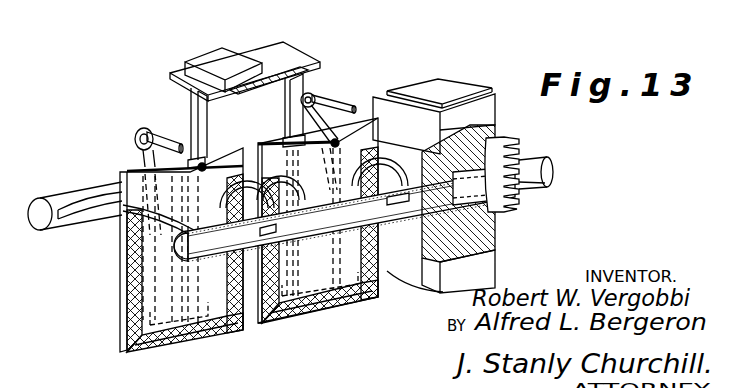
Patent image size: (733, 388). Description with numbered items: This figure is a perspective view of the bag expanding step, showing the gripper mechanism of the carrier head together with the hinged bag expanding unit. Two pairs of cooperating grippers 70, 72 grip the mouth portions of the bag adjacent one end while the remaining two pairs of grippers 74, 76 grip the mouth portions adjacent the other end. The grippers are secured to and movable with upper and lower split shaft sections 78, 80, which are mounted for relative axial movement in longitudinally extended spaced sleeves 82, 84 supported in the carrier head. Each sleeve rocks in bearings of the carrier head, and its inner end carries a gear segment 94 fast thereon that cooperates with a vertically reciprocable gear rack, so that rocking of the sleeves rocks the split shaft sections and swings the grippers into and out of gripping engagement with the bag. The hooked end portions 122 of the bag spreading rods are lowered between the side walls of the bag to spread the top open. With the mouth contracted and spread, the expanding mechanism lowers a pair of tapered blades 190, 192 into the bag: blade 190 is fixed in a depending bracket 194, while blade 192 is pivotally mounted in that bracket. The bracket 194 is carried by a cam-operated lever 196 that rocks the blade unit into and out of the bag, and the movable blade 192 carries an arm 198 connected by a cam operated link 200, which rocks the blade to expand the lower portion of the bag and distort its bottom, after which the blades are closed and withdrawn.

The grippers 70 is at (123, 237).
The grippers 72 is at (289, 178).
The grippers 74 is at (233, 205).
The grippers 76 is at (394, 178).
The upper split shaft section 78 is at (537, 158).
The lower split shaft section 80 is at (530, 187).
The sleeve 82 is at (384, 221).
The sleeve 84 is at (66, 190).
The gear segment 94 is at (500, 142).
The hooked end portions 122 is at (206, 168).
The tapered blade 190 is at (152, 295).
The tapered blade 192 is at (194, 334).
The depending bracket 194 is at (189, 103).
The cam-operated lever 196 is at (233, 50).
The arm 198 is at (136, 149).
The link 200 is at (170, 132).